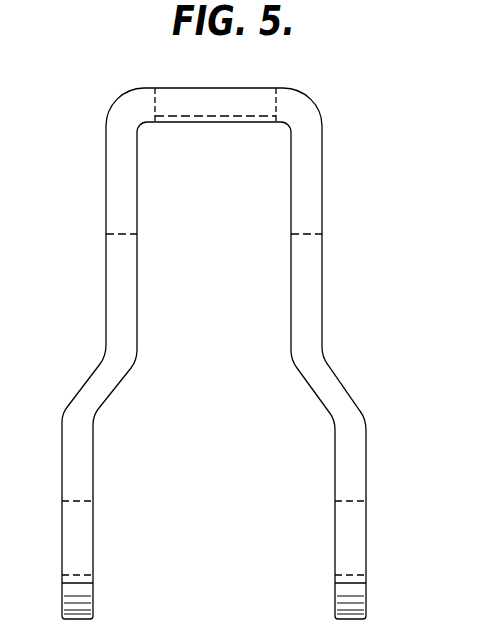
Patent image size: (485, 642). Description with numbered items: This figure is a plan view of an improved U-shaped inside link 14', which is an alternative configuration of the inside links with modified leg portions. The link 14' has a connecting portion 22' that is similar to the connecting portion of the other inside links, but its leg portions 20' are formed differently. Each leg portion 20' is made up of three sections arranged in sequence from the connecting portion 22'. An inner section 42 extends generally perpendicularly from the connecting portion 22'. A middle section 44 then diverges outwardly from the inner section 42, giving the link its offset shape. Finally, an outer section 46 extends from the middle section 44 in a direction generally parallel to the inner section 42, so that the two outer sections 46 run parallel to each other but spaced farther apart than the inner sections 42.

The link 14' is at (239, 329).
The connecting portion 22' is at (192, 86).
The inner section 42 is at (123, 178).
The leg portions 20' is at (239, 372).
The middle section 44 is at (105, 386).
The outer section 46 is at (83, 474).